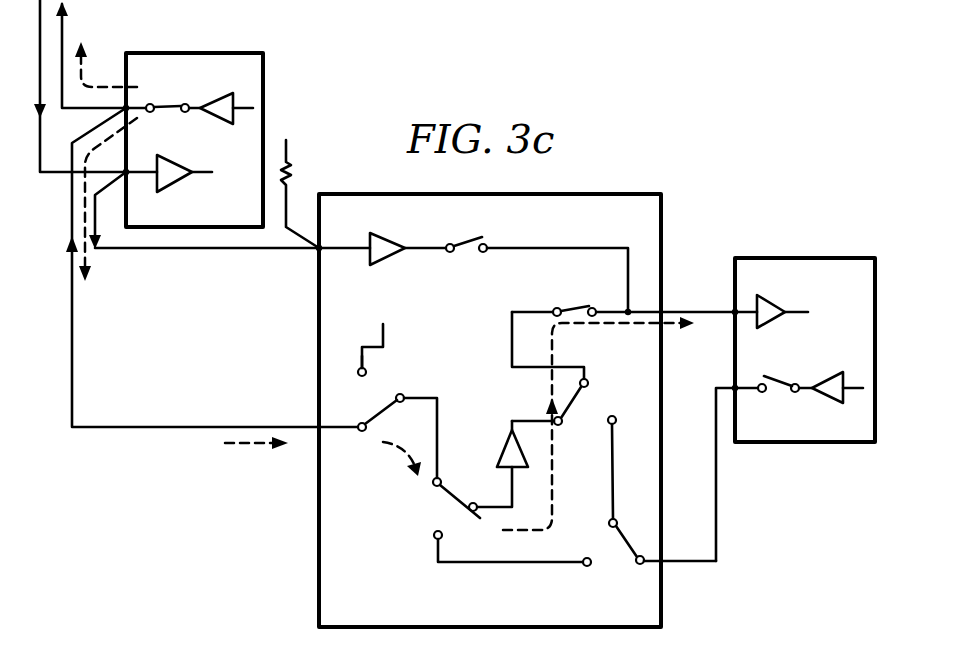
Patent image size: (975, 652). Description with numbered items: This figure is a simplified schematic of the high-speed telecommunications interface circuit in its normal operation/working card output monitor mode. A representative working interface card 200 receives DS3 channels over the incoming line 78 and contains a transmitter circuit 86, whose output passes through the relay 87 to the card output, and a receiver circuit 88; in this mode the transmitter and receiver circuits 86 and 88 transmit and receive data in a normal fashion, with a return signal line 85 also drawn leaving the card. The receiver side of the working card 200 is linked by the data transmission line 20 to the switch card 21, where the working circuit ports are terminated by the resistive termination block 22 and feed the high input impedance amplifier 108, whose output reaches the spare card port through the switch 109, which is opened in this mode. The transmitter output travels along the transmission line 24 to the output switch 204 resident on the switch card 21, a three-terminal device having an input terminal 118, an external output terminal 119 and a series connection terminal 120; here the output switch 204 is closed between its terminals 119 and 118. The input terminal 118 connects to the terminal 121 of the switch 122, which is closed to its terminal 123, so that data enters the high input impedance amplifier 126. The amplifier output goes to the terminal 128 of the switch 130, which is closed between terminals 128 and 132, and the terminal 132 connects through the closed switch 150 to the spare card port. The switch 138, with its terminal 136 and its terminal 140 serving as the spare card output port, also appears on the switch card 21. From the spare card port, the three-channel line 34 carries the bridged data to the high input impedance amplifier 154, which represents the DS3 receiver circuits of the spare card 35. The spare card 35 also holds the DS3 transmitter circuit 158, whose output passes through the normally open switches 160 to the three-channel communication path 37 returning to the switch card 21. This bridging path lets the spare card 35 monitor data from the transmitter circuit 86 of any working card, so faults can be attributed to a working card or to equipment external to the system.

The data transmission line 20 is at (195, 250).
The switch card 21 is at (318, 512).
The resistive termination block 22 is at (292, 165).
The transmission line 24 is at (183, 429).
The three-channel line 34 is at (705, 310).
The spare card 35 is at (810, 257).
The three-channel communication path 37 is at (717, 500).
The incoming line 78 is at (58, 175).
The output signal line 85 is at (63, 24).
The transmitter circuit 86 is at (213, 97).
The relay 87 is at (168, 114).
The receiver circuit 88 is at (177, 187).
The high input impedance amplifier 108 is at (415, 226).
The switch 109 is at (467, 253).
The input terminal 118 is at (403, 393).
The external output terminal 119 is at (365, 437).
The series connection terminal 120 is at (358, 365).
The terminal 121 is at (427, 484).
The switch 122 is at (440, 513).
The terminal 123 is at (473, 497).
The high input impedance amplifier 126 is at (502, 442).
The terminal 128 is at (563, 428).
The switch 130 is at (595, 405).
The terminal 132 is at (598, 368).
The terminal 136 is at (607, 515).
The switch 138 is at (602, 542).
The terminal 140 is at (637, 570).
The switch 150 is at (573, 303).
The high input impedance amplifier 154 is at (800, 288).
The DS3 transmitter circuit 158 is at (822, 377).
The normally open switch 160 is at (778, 396).
The working interface card 200 is at (265, 88).
The output switch 204 is at (367, 395).